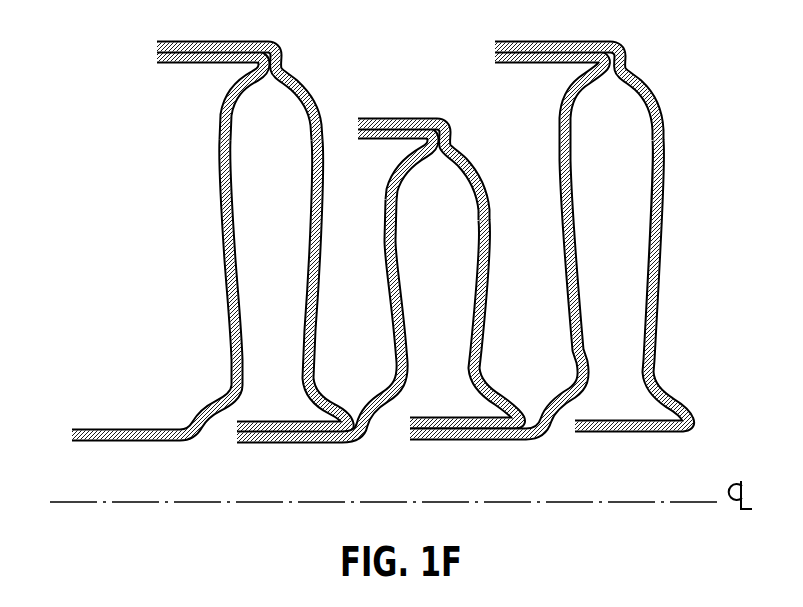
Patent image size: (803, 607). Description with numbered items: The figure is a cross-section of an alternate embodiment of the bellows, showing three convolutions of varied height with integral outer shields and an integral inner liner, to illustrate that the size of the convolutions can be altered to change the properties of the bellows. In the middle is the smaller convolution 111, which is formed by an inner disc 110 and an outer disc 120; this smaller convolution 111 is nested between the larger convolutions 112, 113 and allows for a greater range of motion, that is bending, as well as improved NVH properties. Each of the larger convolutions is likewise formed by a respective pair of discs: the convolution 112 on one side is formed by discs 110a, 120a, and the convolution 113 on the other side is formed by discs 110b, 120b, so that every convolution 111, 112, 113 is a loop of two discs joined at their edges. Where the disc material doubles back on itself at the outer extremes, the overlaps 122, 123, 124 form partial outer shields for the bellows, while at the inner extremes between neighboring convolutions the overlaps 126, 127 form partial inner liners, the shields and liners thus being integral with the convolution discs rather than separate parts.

The inner disc 110 is at (393, 316).
The disc 110a is at (223, 224).
The disc 110b is at (574, 192).
The smaller convolution 111 is at (439, 260).
The larger convolution 112 is at (252, 220).
The larger convolution 113 is at (598, 222).
The outer disc 120 is at (487, 284).
The disc 120a is at (308, 217).
The disc 120b is at (658, 243).
The overlap 122 is at (202, 42).
The overlap 123 is at (395, 119).
The overlap 124 is at (514, 42).
The overlap 126 is at (290, 444).
The overlap 127 is at (476, 441).